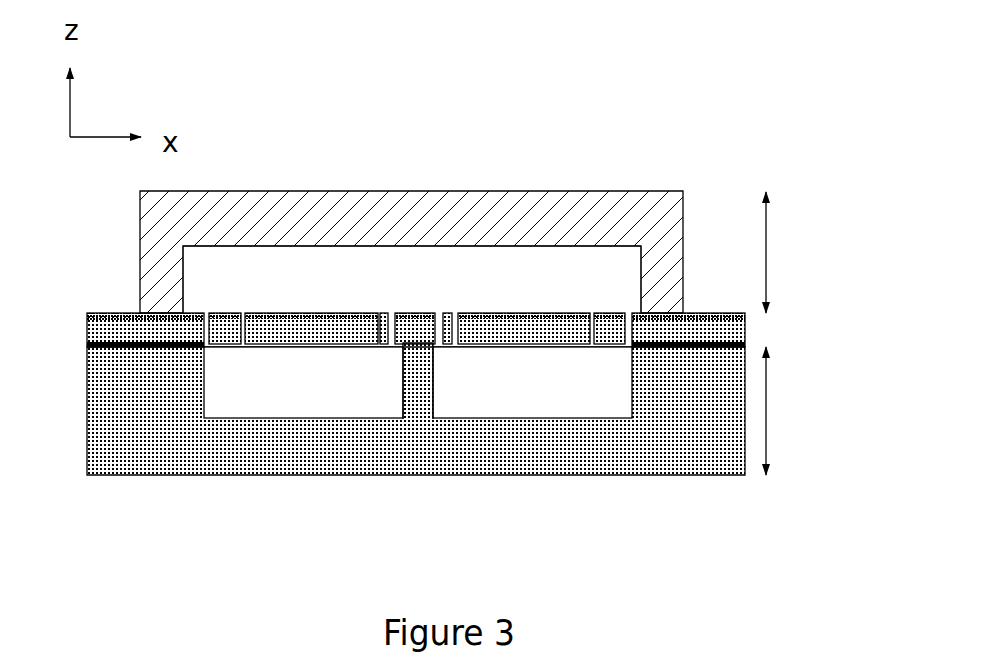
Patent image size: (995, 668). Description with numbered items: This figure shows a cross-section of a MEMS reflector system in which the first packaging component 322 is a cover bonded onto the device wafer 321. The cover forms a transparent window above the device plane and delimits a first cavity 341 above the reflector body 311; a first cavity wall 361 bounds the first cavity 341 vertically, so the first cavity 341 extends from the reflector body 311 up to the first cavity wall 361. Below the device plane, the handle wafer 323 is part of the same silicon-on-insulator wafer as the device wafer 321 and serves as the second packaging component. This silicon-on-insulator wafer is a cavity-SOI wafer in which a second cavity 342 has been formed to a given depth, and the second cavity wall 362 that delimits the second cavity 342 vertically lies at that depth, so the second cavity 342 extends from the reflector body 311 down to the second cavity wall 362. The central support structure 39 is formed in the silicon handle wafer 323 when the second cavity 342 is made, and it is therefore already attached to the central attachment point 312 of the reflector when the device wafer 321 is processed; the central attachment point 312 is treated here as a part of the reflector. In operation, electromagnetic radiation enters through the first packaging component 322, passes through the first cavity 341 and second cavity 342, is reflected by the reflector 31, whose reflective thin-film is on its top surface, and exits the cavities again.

The reflector 31 is at (427, 340).
The reflector body 311 is at (551, 438).
The central attachment point 312 is at (412, 328).
The central support structure 39 is at (417, 385).
The device wafer 321 is at (766, 313).
The first packaging component 322 is at (804, 252).
The handle wafer 323 is at (804, 411).
The first cavity 341 is at (619, 285).
The second cavity 342 is at (240, 395).
The first cavity wall 361 is at (493, 247).
The second cavity wall 362 is at (338, 412).